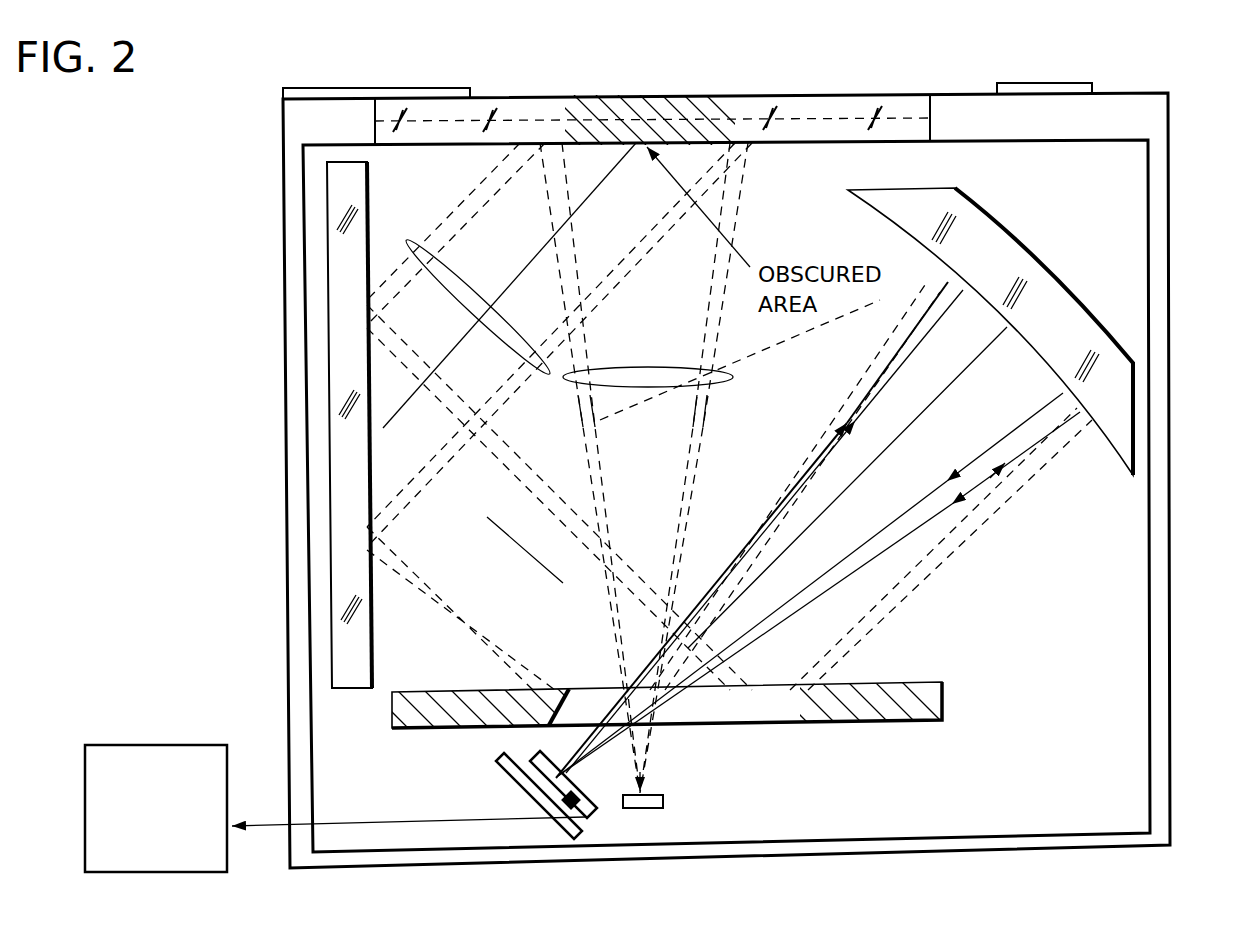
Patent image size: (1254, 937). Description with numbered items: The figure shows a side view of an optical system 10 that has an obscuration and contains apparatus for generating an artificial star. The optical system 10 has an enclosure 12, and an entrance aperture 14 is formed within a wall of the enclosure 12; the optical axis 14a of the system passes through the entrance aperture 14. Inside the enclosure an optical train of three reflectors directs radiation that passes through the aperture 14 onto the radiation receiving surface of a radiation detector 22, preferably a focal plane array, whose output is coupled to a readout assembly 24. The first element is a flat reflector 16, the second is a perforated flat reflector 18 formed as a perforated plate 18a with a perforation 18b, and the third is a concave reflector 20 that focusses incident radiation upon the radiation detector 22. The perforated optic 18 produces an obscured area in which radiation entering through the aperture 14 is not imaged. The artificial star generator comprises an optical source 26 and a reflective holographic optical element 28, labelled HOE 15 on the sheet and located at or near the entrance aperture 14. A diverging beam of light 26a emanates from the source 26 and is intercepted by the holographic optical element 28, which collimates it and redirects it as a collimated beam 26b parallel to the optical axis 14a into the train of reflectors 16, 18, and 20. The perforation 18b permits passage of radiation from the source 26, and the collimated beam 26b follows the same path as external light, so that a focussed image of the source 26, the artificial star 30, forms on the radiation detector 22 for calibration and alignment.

The optical system 10 is at (1201, 96).
The enclosure 12 is at (1170, 282).
The entrance aperture 14 is at (896, 93).
The optical axis 14a is at (676, 100).
The holographic optical element (HOE) 15 is at (512, 108).
The flat reflector 16 is at (327, 408).
The perforated flat reflector 18 is at (657, 702).
The perforated plate 18a is at (392, 718).
The perforation 18b is at (722, 706).
The concave reflector 20 is at (1043, 265).
The radiation detector 22 is at (498, 780).
The readout assembly 24 is at (188, 745).
The optical source 26 is at (665, 802).
The diverging beam of light 26a is at (733, 377).
The collimated beam 26b is at (410, 240).
The holographic optical element 28 is at (548, 118).
The artificial star 30 is at (562, 787).